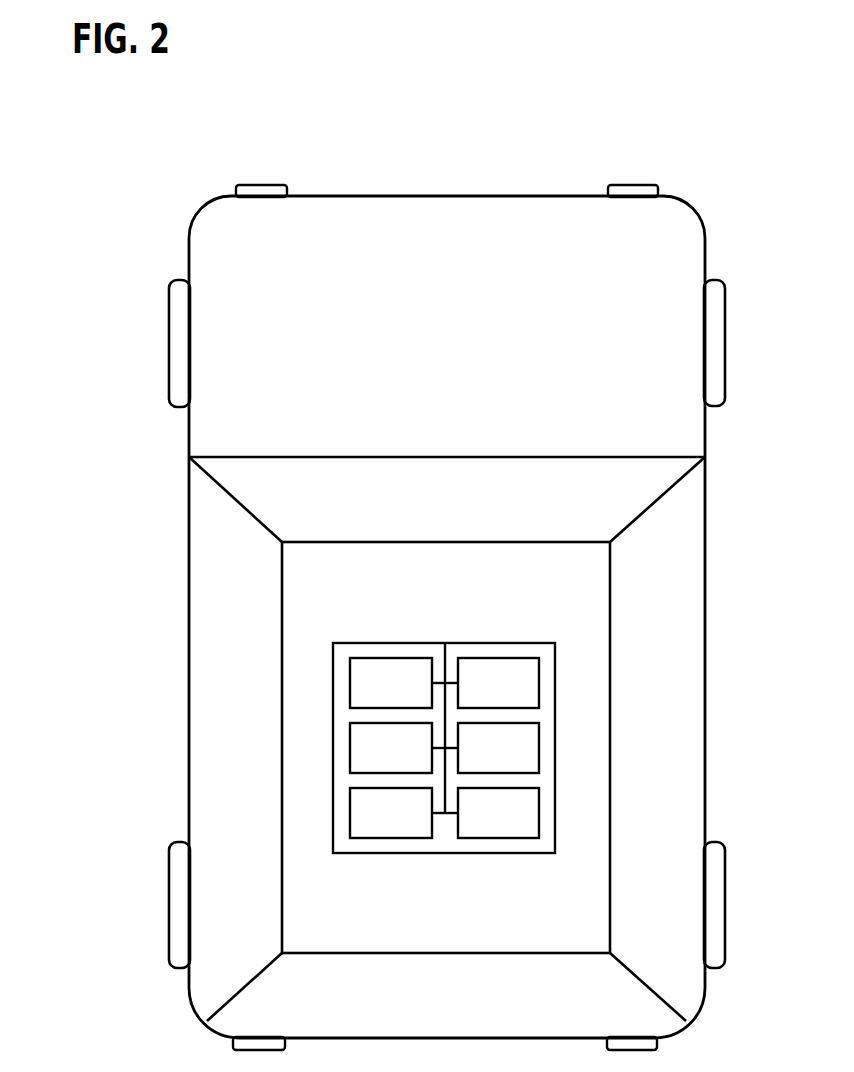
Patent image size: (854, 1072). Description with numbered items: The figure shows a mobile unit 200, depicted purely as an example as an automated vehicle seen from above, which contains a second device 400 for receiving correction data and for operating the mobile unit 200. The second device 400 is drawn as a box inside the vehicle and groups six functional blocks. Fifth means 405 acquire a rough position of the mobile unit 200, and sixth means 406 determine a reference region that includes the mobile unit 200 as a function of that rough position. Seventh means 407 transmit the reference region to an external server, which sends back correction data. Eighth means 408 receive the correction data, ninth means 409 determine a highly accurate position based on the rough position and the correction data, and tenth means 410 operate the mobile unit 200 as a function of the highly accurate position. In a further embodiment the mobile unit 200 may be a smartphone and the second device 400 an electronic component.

The mobile unit 200 is at (452, 196).
The second device 400 is at (389, 643).
The fifth means 405 is at (412, 696).
The sixth means 406 is at (519, 696).
The seventh means 407 is at (412, 761).
The eighth means 408 is at (519, 761).
The ninth means 409 is at (412, 826).
The tenth means 410 is at (519, 826).